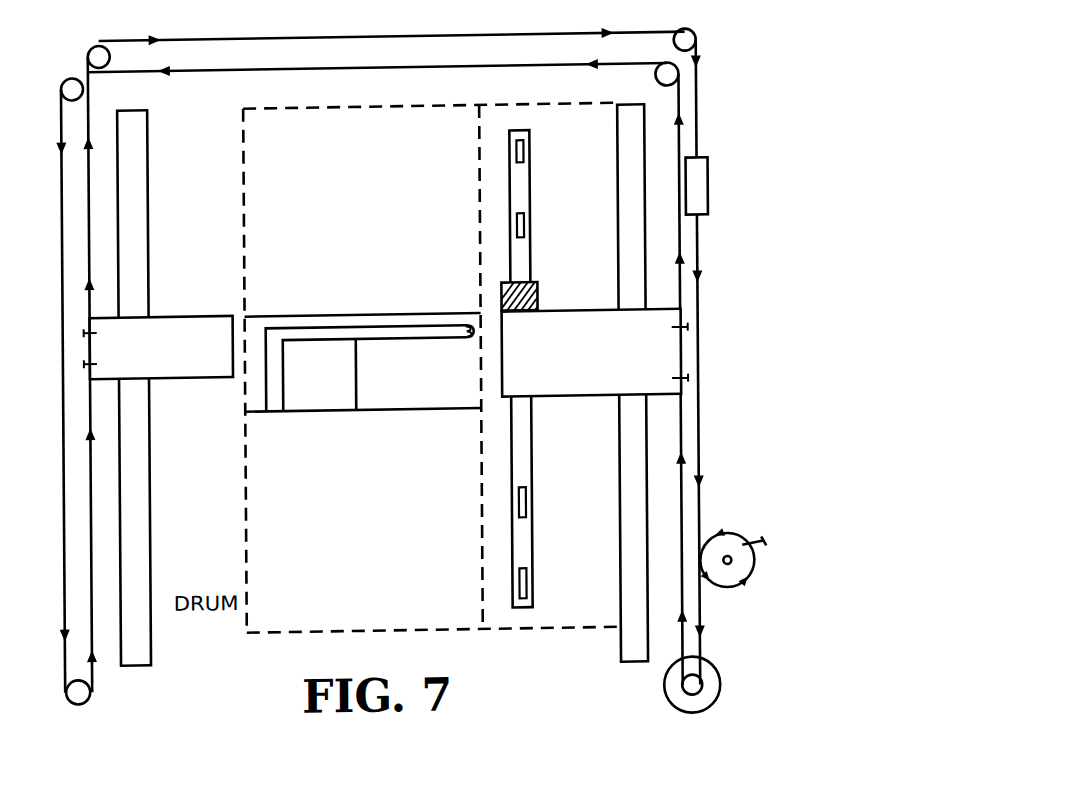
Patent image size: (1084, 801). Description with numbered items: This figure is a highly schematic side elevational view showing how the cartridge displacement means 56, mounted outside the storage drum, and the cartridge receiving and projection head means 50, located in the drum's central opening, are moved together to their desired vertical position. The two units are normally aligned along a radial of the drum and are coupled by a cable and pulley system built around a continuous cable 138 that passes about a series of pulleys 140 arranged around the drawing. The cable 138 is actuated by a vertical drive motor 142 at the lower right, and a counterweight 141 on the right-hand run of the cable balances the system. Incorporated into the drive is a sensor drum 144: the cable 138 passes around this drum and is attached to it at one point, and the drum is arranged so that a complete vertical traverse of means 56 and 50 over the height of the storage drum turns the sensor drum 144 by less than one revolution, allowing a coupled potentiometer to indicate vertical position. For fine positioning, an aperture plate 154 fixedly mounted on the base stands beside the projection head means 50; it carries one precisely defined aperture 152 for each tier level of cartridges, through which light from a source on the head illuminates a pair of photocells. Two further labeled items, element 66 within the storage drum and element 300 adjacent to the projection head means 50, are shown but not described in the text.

The continuous cable 138 is at (227, 33).
The pulleys 140 is at (67, 71).
The counterweight 141 is at (709, 203).
The vertical drive motor 142 is at (718, 684).
The sensor drum 144 is at (744, 543).
The aperture 152 is at (525, 148).
The aperture plate 154 is at (522, 187).
The fine position sensor block 300 is at (496, 296).
The cartridge receiving and projection head means 50 is at (582, 311).
The cartridge displacement means 56 is at (205, 311).
The cartridge 66 is at (334, 312).